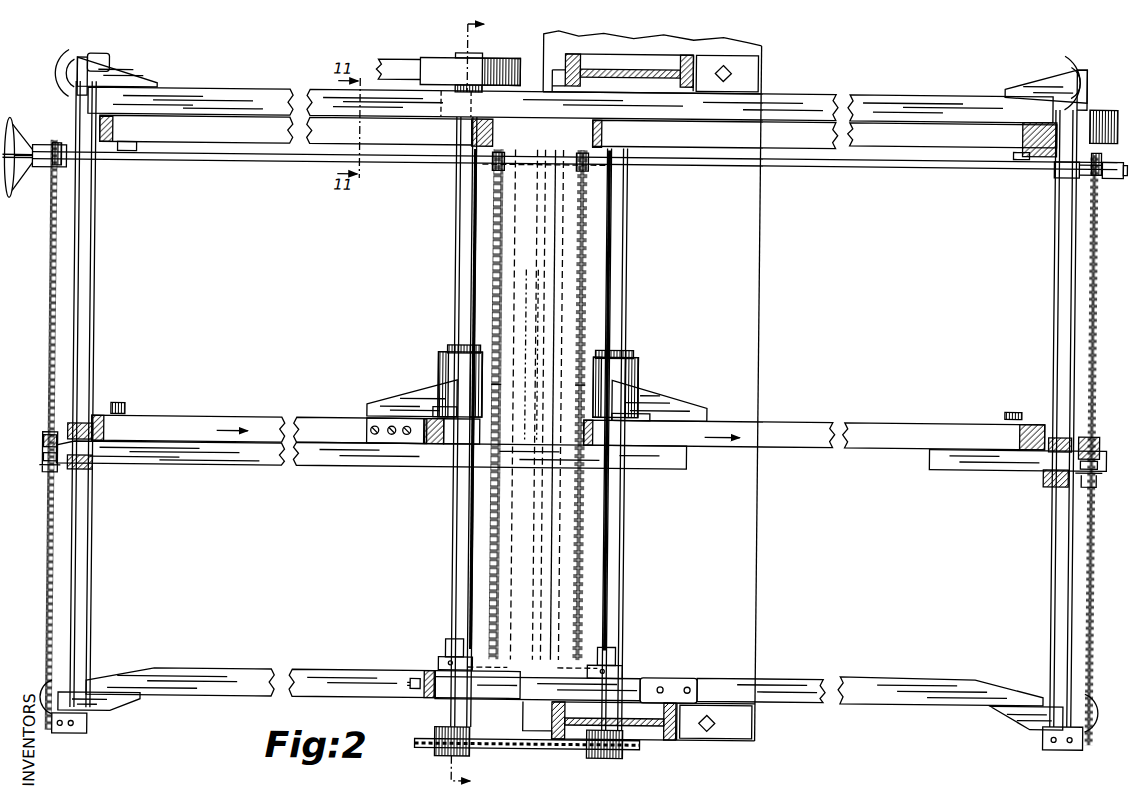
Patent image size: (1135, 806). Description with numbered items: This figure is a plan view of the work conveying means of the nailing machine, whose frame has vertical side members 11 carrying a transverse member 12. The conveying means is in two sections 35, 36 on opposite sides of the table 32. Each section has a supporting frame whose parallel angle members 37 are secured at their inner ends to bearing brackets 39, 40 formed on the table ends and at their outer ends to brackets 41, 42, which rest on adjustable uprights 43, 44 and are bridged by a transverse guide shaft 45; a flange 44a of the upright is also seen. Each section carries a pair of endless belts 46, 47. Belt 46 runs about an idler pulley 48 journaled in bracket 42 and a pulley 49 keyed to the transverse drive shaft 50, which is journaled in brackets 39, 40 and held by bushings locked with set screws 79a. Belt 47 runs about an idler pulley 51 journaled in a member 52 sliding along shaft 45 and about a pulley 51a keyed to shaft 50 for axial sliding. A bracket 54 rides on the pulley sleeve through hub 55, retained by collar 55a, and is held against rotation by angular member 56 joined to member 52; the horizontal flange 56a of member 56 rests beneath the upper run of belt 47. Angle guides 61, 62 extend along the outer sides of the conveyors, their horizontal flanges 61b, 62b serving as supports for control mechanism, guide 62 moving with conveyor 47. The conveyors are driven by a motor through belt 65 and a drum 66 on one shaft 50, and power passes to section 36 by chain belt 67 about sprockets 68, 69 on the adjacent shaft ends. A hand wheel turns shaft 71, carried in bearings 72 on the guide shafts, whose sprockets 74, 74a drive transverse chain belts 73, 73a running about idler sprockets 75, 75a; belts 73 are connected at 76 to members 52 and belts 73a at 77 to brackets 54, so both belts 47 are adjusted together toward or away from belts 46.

The vertical side members 11 is at (608, 56).
The transverse member 12 is at (478, 403).
The table 32 is at (528, 680).
The conveyor section 35 is at (320, 152).
The conveyor section 36 is at (896, 152).
The angle member 37 is at (348, 699).
The bearing bracket 39 is at (432, 699).
The bearing bracket 40 is at (438, 126).
The bracket 41 is at (108, 715).
The bracket 42 is at (120, 82).
The upright 43 is at (70, 690).
The upright 44 is at (66, 76).
The roller flange 44a is at (103, 44).
The transverse guide shaft 45 is at (92, 516).
The endless conveyor belt 46 is at (262, 150).
The endless conveyor belt 47 is at (212, 418).
The idler pulley 48 is at (160, 156).
The pulley 49 is at (470, 146).
The transverse drive shaft 50 is at (454, 250).
The idler pulley 51 is at (140, 420).
The pulley 51a is at (448, 408).
The sliding member 52 is at (85, 428).
The bracket 54 is at (400, 404).
The hub 55 is at (440, 370).
The collar 55a is at (460, 350).
The angular member 56 is at (358, 468).
The horizontal flange 56a is at (362, 420).
The angle member 61 is at (196, 84).
The horizontal flange 61b is at (255, 100).
The angular guide 62 is at (215, 468).
The horizontal flange 62b is at (270, 466).
The belt 65 is at (406, 61).
The pulley or drum 66 is at (515, 59).
The chain belt 67 is at (514, 750).
The sprocket 68 is at (438, 752).
The sprocket 69 is at (628, 752).
The shaft 71 is at (208, 166).
The bearings 72 is at (44, 172).
The chain belt 73 is at (48, 240).
The chain belt 73a is at (491, 222).
The sprocket 74 is at (54, 148).
The sprocket 74a is at (490, 165).
The idler sprocket 75 is at (50, 738).
The idler sprocket 75a is at (482, 640).
The connection 76 is at (43, 455).
The connection 77 is at (576, 386).
The set screw 79a is at (415, 680).